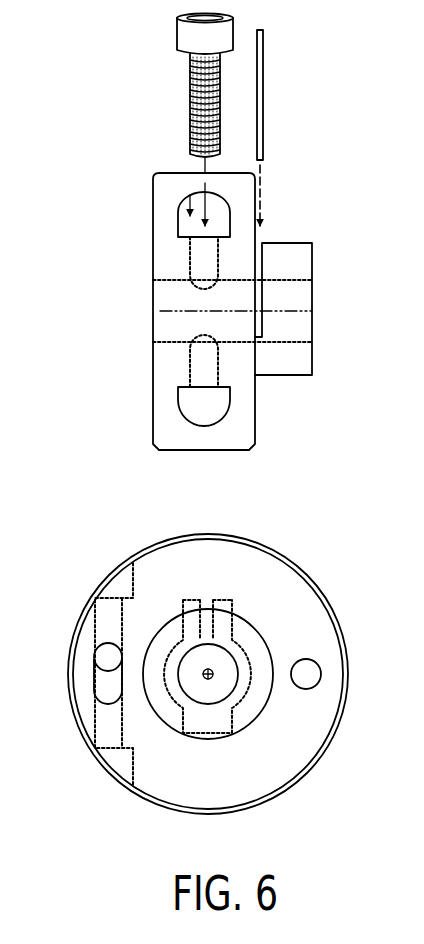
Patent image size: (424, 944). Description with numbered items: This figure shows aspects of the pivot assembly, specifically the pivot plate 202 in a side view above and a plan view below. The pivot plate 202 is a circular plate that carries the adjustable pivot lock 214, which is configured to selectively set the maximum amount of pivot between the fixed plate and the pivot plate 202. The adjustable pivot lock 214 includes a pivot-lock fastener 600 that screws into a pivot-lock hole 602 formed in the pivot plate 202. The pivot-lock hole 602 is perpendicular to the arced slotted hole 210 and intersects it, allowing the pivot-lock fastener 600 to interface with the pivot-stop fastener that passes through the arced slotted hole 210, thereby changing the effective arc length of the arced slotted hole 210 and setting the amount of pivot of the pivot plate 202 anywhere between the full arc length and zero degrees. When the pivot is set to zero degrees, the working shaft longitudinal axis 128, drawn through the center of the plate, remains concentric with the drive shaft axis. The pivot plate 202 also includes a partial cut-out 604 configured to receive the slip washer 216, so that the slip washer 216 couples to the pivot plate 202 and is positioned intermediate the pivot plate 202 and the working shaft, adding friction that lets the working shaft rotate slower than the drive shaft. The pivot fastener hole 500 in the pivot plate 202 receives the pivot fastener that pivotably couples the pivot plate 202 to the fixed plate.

The pivot-lock fastener 600 is at (176, 30).
The adjustable pivot lock 214 is at (170, 112).
The slip washer 216 is at (263, 95).
The pivot-lock hole 602 is at (188, 210).
The partial cut-out 604 is at (285, 222).
The arced slotted hole 210 is at (180, 305).
The working shaft longitudinal axis 128 is at (297, 313).
The pivot plate 202 is at (185, 452).
The pivot fastener hole 500 is at (305, 678).